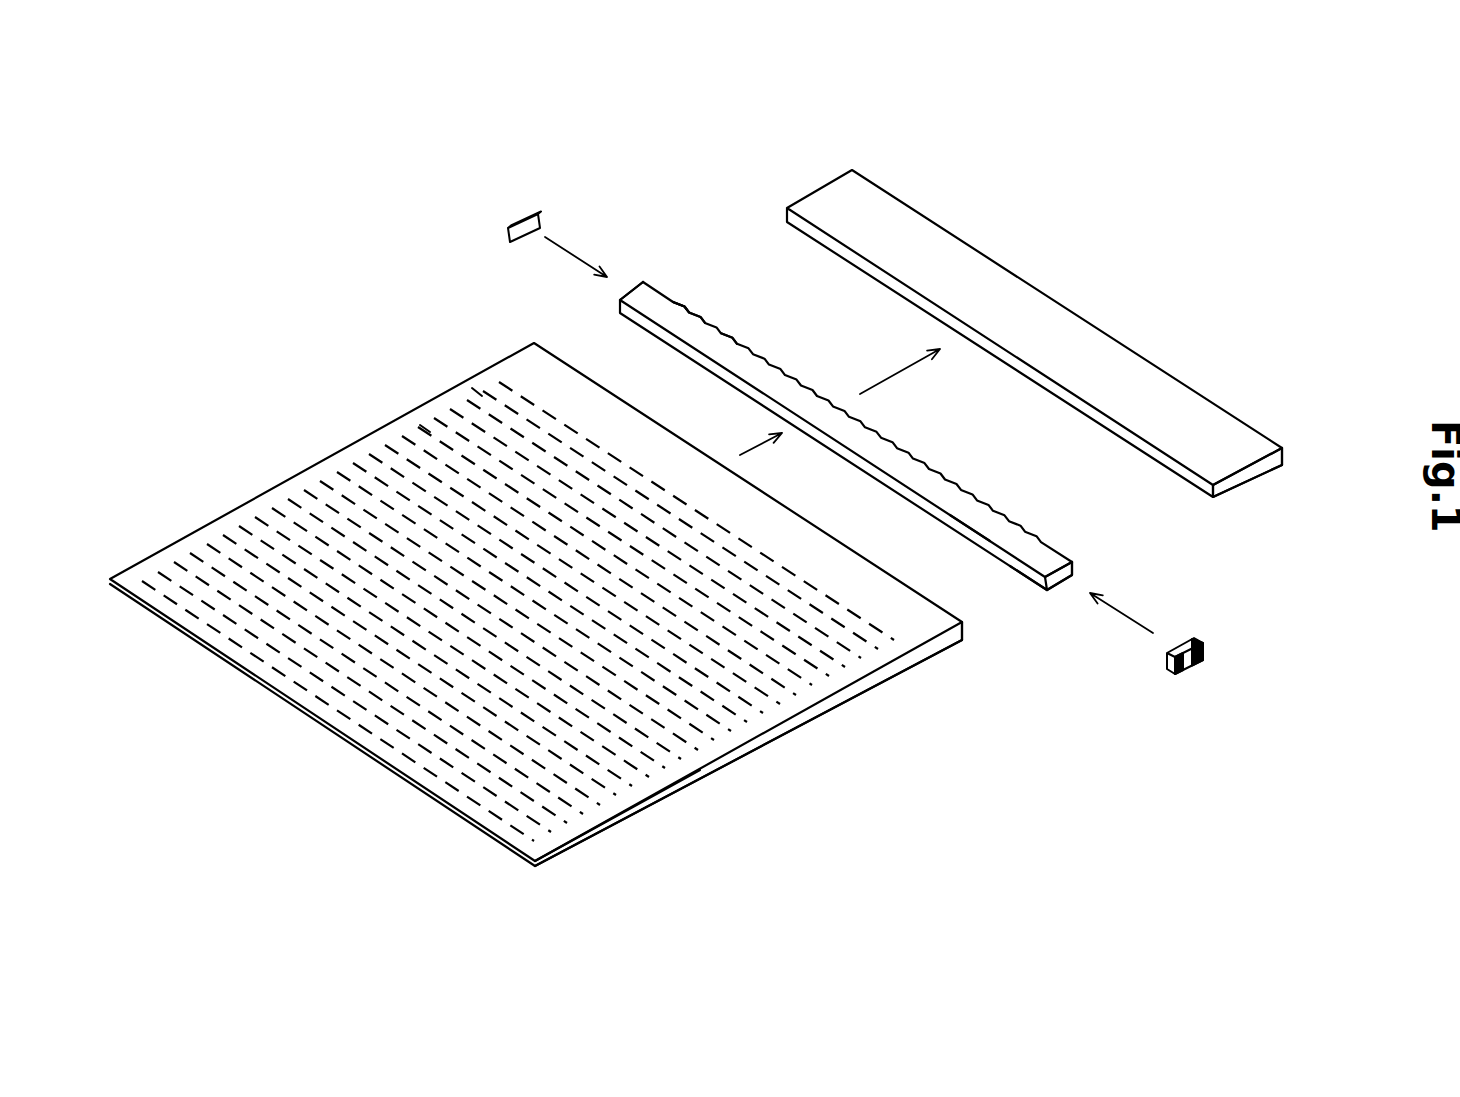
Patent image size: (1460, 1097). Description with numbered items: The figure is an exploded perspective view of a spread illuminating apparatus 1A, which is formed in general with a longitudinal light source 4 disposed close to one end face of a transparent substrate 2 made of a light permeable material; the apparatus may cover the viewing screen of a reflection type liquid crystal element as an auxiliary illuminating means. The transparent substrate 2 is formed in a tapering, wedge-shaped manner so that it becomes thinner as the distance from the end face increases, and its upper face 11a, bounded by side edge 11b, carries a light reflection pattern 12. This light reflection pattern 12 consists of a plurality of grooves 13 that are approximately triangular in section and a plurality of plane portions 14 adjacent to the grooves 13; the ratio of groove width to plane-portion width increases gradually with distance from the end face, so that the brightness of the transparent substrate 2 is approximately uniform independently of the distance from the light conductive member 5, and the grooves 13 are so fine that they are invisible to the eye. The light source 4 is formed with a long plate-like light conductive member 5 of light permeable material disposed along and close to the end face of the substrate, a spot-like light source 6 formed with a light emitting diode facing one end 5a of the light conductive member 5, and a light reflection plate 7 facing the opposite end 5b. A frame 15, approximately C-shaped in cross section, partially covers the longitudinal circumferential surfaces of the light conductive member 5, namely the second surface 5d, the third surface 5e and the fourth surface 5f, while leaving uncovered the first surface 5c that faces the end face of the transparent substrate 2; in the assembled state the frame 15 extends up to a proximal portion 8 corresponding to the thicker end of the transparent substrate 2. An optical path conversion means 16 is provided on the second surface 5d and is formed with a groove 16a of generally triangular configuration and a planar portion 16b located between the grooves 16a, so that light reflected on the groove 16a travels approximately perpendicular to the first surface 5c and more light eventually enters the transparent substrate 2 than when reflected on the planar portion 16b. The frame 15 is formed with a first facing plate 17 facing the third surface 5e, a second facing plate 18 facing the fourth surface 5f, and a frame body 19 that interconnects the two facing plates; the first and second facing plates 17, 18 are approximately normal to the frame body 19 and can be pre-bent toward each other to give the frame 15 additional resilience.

The spread illuminating apparatus 1A is at (1150, 205).
The transparent substrate 2 is at (536, 604).
The light source 4 is at (1233, 690).
The light conductive member 5 is at (845, 393).
The one end of the light conductive member 5a is at (1075, 565).
The opposite end of the light conductive member 5b is at (618, 305).
The first surface 5c is at (1028, 573).
The second surface 5d is at (1058, 548).
The third surface 5e is at (936, 485).
The fourth surface 5f is at (967, 543).
The spot-like light source 6 is at (1197, 640).
The light reflection plate 7 is at (527, 217).
The proximal portion 8 is at (915, 628).
The upper face 11a is at (757, 728).
The side edge of base plate 11b is at (857, 695).
The light reflection pattern 12 is at (337, 467).
The grooves 13 is at (425, 428).
The plane portions 14 is at (478, 392).
The frame 15 is at (1061, 363).
The optical path conversion means 16 is at (772, 261).
The groove 16a is at (673, 302).
The planar portion 16b is at (733, 336).
The first facing plate 17 is at (1226, 453).
The second facing plate 18 is at (1228, 497).
The frame body 19 is at (1283, 458).